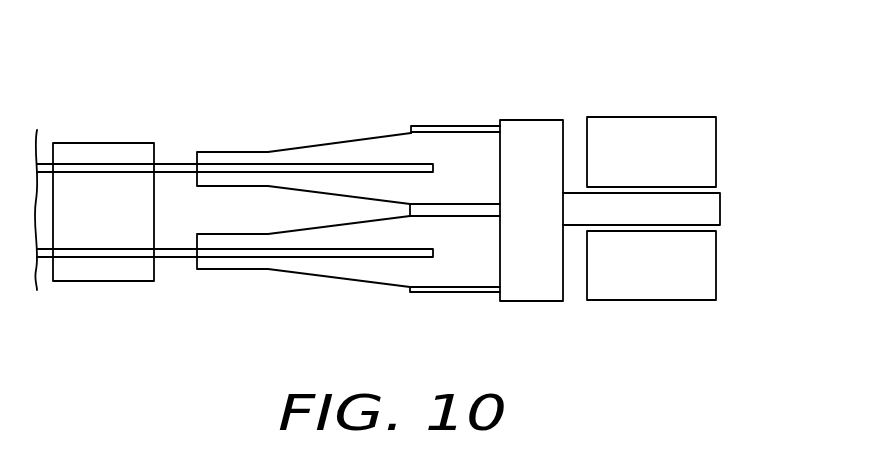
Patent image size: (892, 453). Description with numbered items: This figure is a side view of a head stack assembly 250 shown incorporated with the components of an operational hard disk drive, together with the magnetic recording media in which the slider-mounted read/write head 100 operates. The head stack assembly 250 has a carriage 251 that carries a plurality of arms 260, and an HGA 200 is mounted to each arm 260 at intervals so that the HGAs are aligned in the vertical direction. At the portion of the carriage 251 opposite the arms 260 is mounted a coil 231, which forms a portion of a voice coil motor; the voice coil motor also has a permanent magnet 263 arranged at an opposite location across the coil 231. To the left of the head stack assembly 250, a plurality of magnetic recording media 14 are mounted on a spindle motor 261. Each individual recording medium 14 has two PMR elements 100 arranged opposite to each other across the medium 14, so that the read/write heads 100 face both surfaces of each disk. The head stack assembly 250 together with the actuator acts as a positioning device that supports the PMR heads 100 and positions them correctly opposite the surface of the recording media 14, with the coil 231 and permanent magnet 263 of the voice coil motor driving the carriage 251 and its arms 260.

The magnetic recording media 14 is at (167, 164).
The slider-mounted read/write head 100 is at (196, 153).
The HGA 200 is at (288, 152).
The head stack assembly 250 is at (543, 90).
The carriage 251 is at (532, 287).
The arm 260 is at (420, 128).
The spindle motor 261 is at (92, 158).
The permanent magnet 263 is at (652, 130).
The coil 231 is at (710, 207).